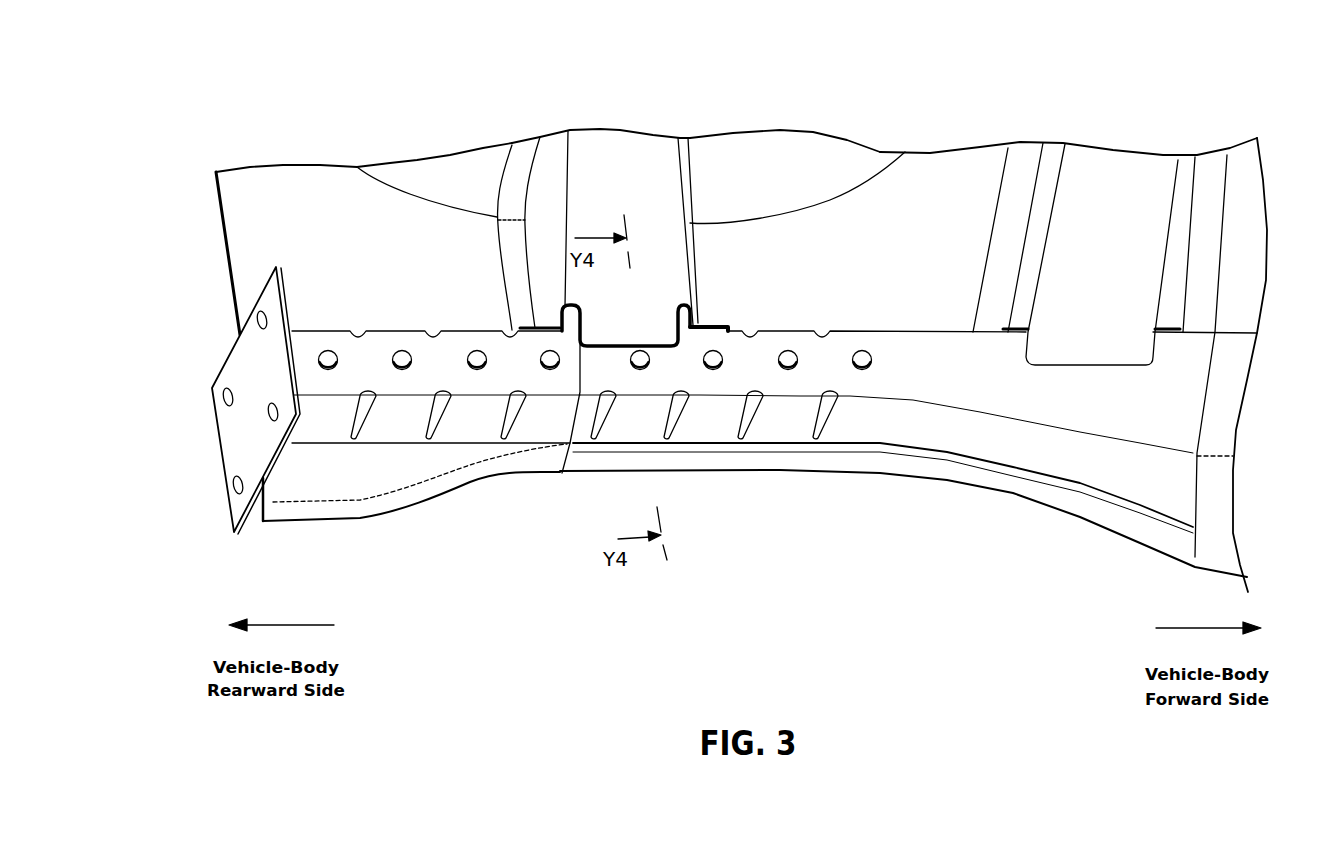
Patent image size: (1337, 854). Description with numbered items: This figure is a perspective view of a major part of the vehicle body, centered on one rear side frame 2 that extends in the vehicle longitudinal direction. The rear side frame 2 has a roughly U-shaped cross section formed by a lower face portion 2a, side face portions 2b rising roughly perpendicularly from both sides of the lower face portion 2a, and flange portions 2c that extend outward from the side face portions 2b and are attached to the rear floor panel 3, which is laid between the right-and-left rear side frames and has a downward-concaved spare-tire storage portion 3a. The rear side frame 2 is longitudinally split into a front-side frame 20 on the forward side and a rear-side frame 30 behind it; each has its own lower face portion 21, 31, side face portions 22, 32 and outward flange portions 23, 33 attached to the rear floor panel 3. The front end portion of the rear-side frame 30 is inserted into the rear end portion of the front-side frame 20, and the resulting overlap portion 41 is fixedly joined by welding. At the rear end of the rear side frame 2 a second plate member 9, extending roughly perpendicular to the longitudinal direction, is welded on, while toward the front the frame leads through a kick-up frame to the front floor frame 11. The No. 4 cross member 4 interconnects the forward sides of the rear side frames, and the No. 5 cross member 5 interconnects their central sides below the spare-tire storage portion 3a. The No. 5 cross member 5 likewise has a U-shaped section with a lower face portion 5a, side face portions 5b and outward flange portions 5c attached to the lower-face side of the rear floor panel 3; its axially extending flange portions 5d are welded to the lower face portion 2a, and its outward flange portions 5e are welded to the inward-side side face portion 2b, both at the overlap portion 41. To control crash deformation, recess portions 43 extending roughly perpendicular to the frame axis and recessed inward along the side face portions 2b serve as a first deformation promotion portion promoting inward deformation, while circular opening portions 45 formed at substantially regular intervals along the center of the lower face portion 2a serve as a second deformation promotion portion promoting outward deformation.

The rear side frame 2 is at (903, 428).
The lower face portion 2a is at (880, 345).
The side face portion 2b is at (937, 437).
The flange portion 2c is at (1002, 483).
The rear floor panel 3 is at (222, 232).
The spare-tire storage portion 3a is at (788, 142).
The No. 4 cross member 4 is at (1127, 168).
The No. 5 cross member 5 is at (600, 210).
The lower face portion 5a is at (590, 138).
The side face portion 5b is at (548, 147).
The flange portion 5c is at (514, 147).
The flange portion 5d is at (632, 338).
The flange portion 5e is at (702, 320).
The second plate member 9 is at (214, 458).
The front floor frame 11 is at (1238, 383).
The front-side frame 20 is at (787, 439).
The lower face portion 21 is at (762, 347).
The side face portion 22 is at (758, 437).
The flange portion 23 is at (820, 458).
The rear-side frame 30 is at (421, 428).
The lower face portion 31 is at (383, 340).
The side face portion 32 is at (382, 433).
The flange portion 33 is at (310, 487).
The overlap portion 41 is at (628, 435).
The recess portion 43 is at (520, 430).
The opening portion 45 is at (472, 338).